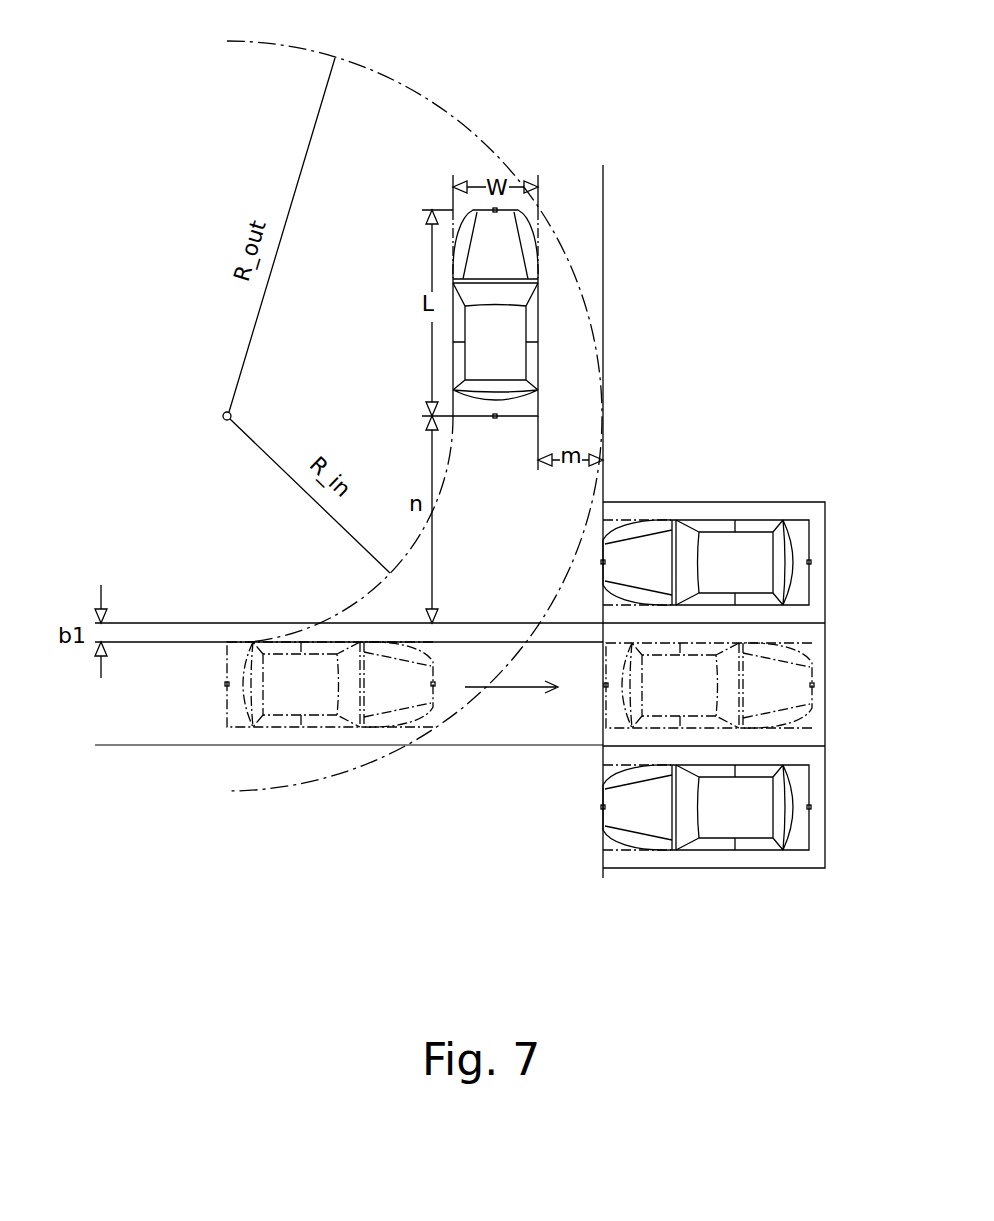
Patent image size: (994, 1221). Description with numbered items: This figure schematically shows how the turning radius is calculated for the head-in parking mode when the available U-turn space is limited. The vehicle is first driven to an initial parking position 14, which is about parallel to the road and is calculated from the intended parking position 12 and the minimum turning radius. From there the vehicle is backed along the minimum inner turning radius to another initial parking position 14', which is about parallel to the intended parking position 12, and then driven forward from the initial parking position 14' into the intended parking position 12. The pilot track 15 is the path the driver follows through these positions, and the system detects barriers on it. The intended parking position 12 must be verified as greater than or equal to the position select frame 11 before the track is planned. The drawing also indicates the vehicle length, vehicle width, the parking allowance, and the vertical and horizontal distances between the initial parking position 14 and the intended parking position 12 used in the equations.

The position select frame 11 is at (812, 685).
The intended parking position 12 is at (825, 720).
The initial parking position 14 is at (579, 313).
The initial parking position 14' is at (330, 753).
The pilot track 15 is at (342, 611).